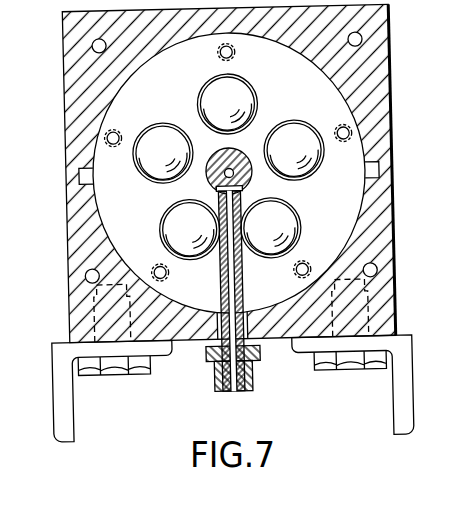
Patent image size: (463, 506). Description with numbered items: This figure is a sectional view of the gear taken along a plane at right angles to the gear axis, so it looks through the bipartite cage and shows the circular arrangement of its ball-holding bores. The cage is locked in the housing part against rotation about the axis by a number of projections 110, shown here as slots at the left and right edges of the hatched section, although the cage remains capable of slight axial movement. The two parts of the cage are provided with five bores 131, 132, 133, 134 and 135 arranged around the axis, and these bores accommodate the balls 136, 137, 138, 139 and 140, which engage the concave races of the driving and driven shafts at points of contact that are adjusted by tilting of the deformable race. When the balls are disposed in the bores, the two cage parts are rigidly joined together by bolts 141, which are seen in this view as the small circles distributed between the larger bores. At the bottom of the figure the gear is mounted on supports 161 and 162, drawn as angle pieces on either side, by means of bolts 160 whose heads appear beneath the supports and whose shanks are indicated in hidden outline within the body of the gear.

The projections 110 is at (82, 174).
The bore 131 is at (207, 82).
The bore 132 is at (323, 166).
The bore 133 is at (296, 241).
The bore 134 is at (198, 261).
The bore 135 is at (141, 180).
The ball 136 is at (245, 97).
The ball 137 is at (298, 133).
The ball 138 is at (285, 222).
The ball 139 is at (177, 223).
The ball 140 is at (162, 135).
The bolts 141 is at (239, 47).
The bolts 160 is at (115, 361).
The support 161 is at (405, 417).
The support 162 is at (62, 426).